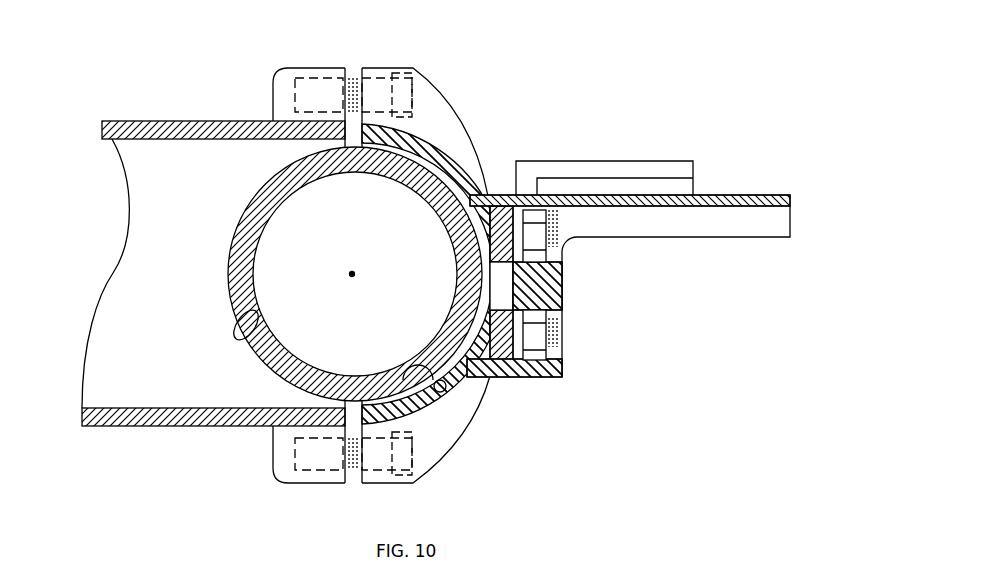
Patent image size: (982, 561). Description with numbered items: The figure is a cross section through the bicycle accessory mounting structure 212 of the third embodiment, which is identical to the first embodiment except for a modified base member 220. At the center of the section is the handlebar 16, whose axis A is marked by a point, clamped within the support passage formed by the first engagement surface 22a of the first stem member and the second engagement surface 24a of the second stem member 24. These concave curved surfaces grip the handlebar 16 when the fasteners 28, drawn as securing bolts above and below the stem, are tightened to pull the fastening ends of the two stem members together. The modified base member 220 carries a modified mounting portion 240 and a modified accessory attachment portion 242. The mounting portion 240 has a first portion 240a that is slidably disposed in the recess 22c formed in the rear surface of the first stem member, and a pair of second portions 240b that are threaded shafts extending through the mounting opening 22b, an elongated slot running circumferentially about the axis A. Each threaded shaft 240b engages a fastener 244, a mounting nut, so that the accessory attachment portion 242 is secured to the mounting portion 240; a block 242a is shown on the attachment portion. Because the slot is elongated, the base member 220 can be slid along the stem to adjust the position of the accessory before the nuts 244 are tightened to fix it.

The handlebar 16 is at (236, 199).
The second stem member 24 is at (165, 112).
The second engagement surface 24a is at (250, 343).
The fasteners 28 is at (413, 95).
The first engagement surface 22a is at (438, 398).
The mounting opening 22b is at (466, 172).
The recess 22c is at (455, 378).
The bicycle accessory mounting structure 212 is at (598, 68).
The modified base member 220 is at (740, 183).
The modified mounting portion 240 is at (512, 289).
The first portion 240a is at (490, 277).
The second portions 240b is at (558, 228).
The modified accessory attachment portion 242 is at (537, 256).
The bracket block 242a is at (652, 161).
The fastener 244 is at (540, 355).
The axis A is at (353, 278).